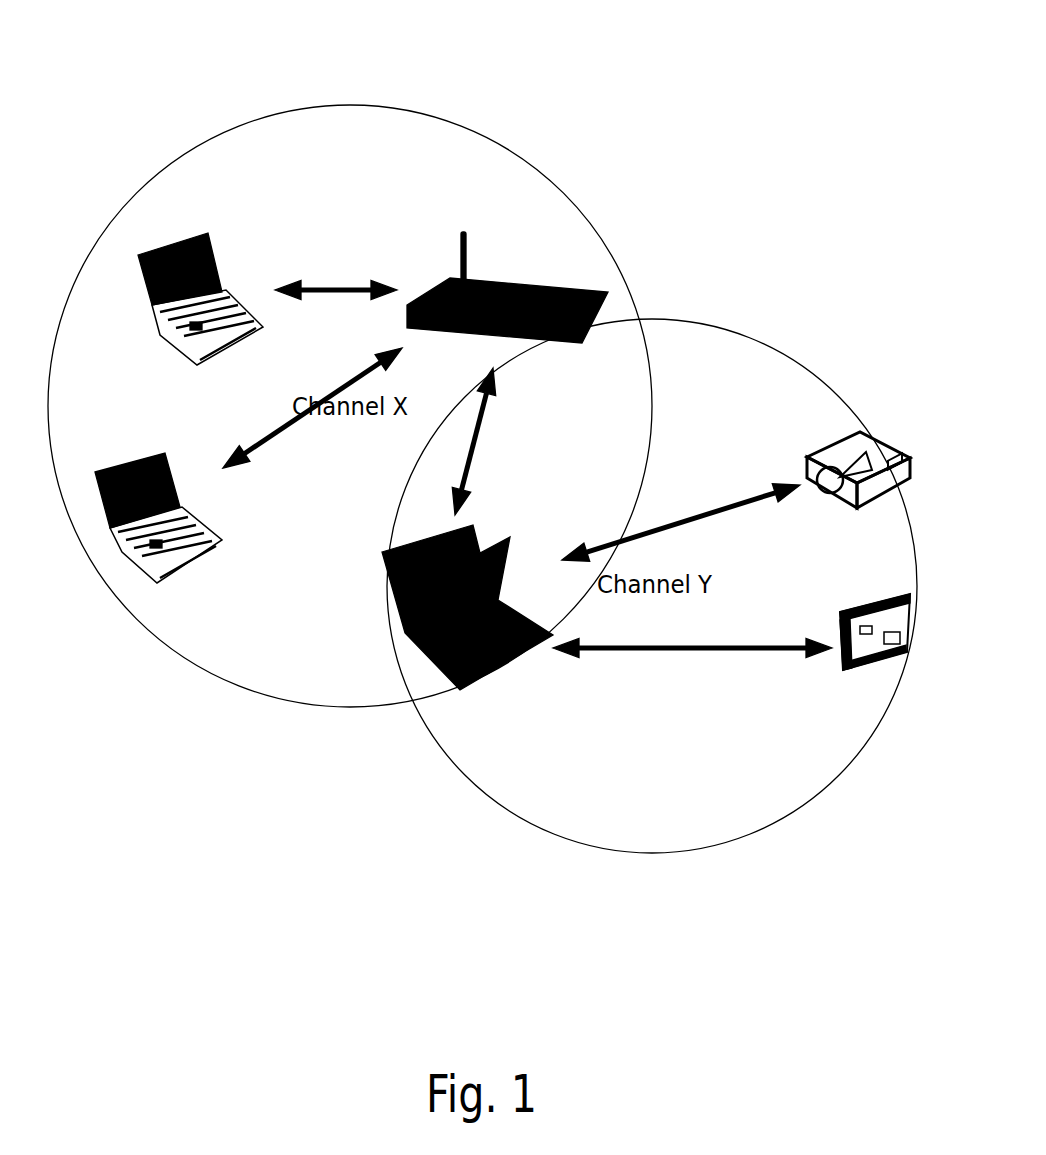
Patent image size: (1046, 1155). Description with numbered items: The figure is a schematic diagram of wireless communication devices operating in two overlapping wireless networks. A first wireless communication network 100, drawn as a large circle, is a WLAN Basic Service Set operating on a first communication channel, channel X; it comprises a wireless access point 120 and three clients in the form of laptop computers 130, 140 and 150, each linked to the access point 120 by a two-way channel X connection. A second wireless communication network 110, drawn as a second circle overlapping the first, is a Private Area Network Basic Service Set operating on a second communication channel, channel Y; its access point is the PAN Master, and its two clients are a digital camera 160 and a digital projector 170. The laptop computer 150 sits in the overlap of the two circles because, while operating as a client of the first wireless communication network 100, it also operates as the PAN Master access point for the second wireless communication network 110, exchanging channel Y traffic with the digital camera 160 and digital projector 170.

The first wireless communication network 100 is at (258, 135).
The second wireless communication network 110 is at (742, 375).
The wireless access point 120 is at (565, 260).
The laptop computer 130 is at (125, 240).
The laptop computer 140 is at (128, 572).
The laptop computer 150 is at (382, 680).
The digital camera 160 is at (893, 752).
The digital projector 170 is at (892, 432).